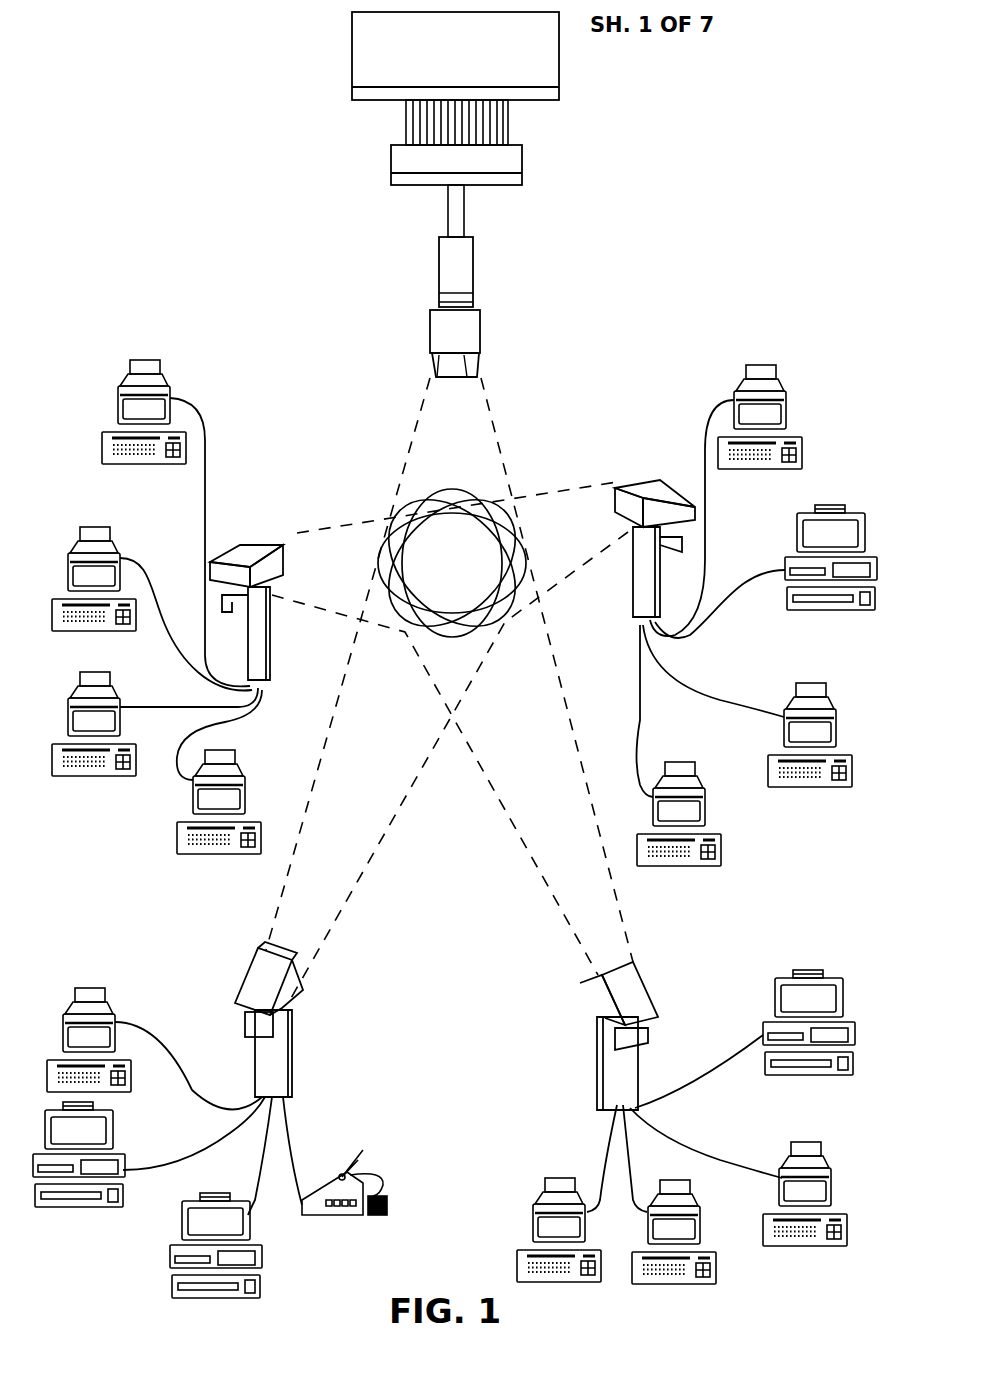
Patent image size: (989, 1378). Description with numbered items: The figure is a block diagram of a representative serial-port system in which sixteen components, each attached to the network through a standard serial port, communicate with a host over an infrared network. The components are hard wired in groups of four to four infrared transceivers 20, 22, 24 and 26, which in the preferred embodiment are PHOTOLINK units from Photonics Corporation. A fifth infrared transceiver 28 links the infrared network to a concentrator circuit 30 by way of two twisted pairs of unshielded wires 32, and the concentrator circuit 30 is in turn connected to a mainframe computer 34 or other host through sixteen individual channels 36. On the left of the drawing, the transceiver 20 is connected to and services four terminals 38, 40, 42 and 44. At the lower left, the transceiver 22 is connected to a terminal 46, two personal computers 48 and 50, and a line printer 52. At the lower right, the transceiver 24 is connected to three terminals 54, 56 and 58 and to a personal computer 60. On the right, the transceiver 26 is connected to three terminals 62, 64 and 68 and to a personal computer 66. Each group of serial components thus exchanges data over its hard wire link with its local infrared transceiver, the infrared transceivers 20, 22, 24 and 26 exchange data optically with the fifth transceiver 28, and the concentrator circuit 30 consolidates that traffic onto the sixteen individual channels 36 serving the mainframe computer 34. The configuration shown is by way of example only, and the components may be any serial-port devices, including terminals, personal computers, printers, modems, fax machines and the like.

The infrared transceiver 20 is at (255, 543).
The infrared transceiver 22 is at (303, 990).
The infrared transceiver 24 is at (635, 967).
The infrared transceiver 26 is at (648, 482).
The fifth infrared transceiver 28 is at (482, 360).
The concentrator circuit 30 is at (400, 160).
The twisted pairs of unshielded wires 32 is at (445, 210).
The mainframe computer 34 is at (375, 58).
The individual channels 36 is at (405, 122).
The terminal 38 is at (118, 394).
The terminal 40 is at (92, 535).
The terminal 42 is at (85, 677).
The terminal 44 is at (177, 845).
The terminal 46 is at (88, 986).
The personal computer 48 is at (80, 1205).
The personal computer 50 is at (168, 1265).
The line printer 52 is at (340, 1213).
The terminal 54 is at (533, 1227).
The terminal 56 is at (703, 1240).
The terminal 58 is at (810, 1147).
The personal computer 60 is at (818, 972).
The terminal 62 is at (705, 803).
The terminal 64 is at (813, 692).
The personal computer 66 is at (832, 503).
The terminal 68 is at (778, 392).